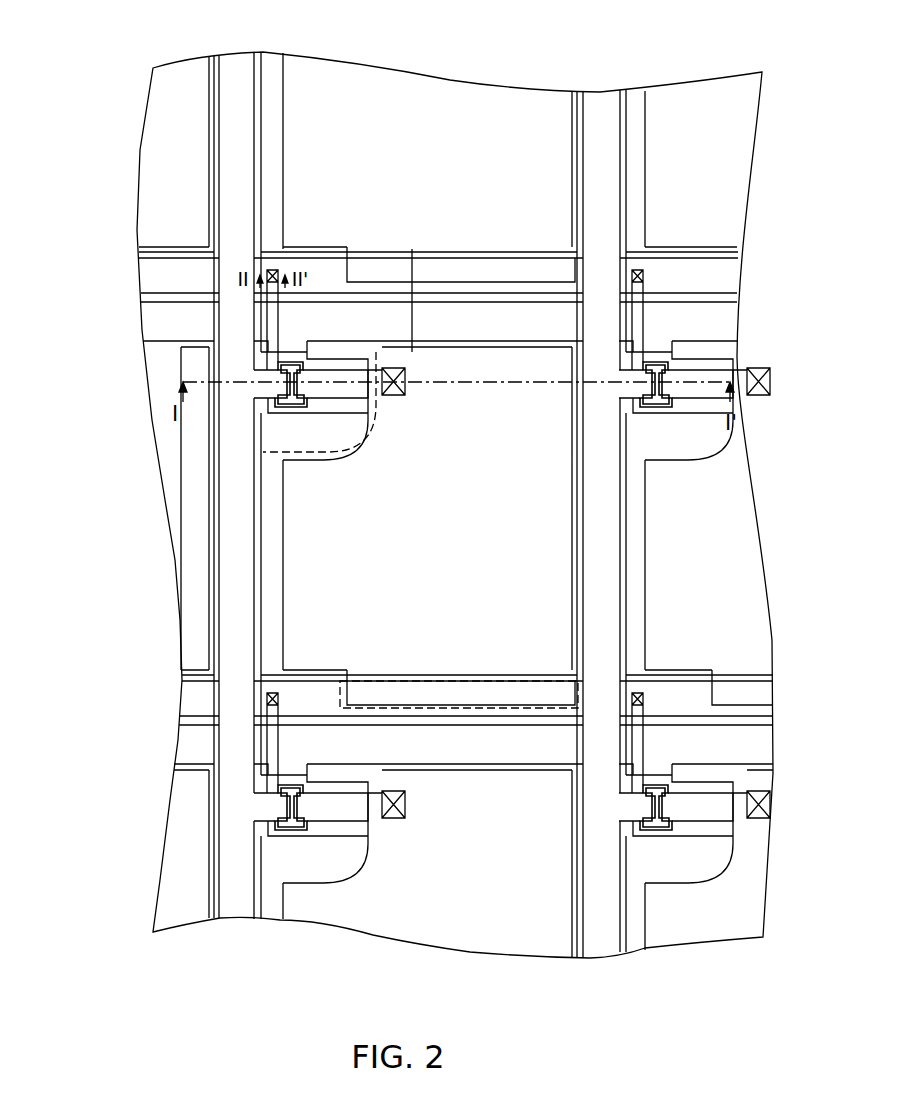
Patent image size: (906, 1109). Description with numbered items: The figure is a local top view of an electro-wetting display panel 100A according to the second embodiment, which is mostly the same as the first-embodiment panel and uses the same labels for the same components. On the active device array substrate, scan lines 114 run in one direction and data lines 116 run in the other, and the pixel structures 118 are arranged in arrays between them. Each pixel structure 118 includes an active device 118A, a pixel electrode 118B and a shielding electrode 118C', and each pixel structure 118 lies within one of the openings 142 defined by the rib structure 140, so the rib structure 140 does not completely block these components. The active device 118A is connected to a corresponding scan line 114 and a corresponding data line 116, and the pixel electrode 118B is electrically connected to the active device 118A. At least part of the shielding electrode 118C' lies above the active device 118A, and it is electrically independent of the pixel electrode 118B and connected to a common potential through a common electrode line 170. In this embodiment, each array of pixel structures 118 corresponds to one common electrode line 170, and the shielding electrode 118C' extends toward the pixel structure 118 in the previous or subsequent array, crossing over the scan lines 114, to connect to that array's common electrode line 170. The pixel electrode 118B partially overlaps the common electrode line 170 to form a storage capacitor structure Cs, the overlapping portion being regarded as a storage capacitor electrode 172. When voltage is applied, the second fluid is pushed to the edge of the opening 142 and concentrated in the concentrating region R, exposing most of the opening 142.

The electro-wetting display panel 100A is at (728, 989).
The scan line 114 is at (368, 340).
The data line 116 is at (253, 166).
The pixel structure 118 is at (75, 400).
The active device 118A is at (291, 407).
The pixel electrode 118B is at (282, 515).
The shielding electrode 118C' is at (356, 531).
The rib structure 140 is at (413, 303).
The opening 142 is at (437, 367).
The common electrode line 170 is at (342, 292).
The storage capacitor electrode 172 is at (552, 710).
The concentrating region R is at (320, 451).
The storage capacitor structure Cs is at (507, 689).